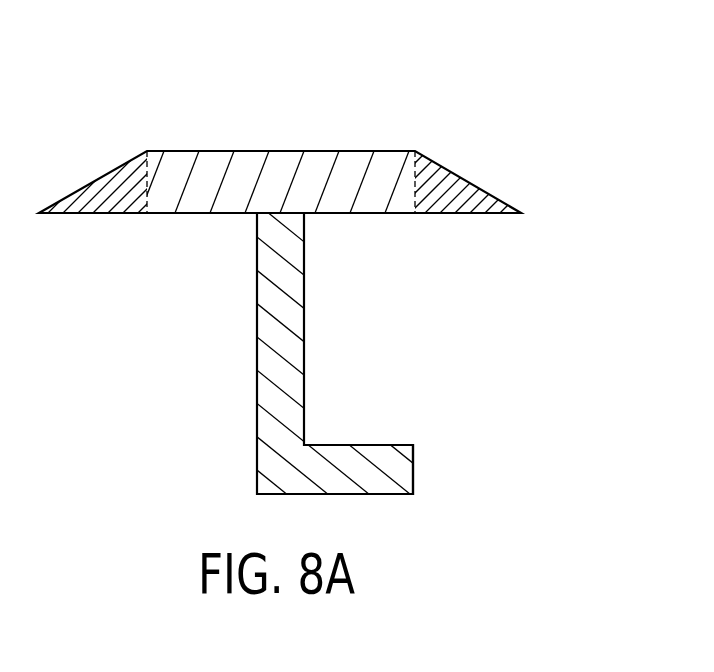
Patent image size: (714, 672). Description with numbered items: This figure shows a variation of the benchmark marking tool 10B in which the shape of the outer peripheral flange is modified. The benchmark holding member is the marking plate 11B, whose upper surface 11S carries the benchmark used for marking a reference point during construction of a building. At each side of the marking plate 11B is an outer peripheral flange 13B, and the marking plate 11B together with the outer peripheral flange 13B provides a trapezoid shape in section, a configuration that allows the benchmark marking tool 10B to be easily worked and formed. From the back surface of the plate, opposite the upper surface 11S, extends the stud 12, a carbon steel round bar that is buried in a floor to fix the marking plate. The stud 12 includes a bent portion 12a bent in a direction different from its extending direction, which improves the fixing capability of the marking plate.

The benchmark marking tool 10B is at (402, 83).
The upper surface 11S is at (282, 150).
The marking plate 11B is at (203, 215).
The outer peripheral flange 13B is at (113, 215).
The stud 12 is at (305, 353).
The bent portion 12a is at (414, 469).